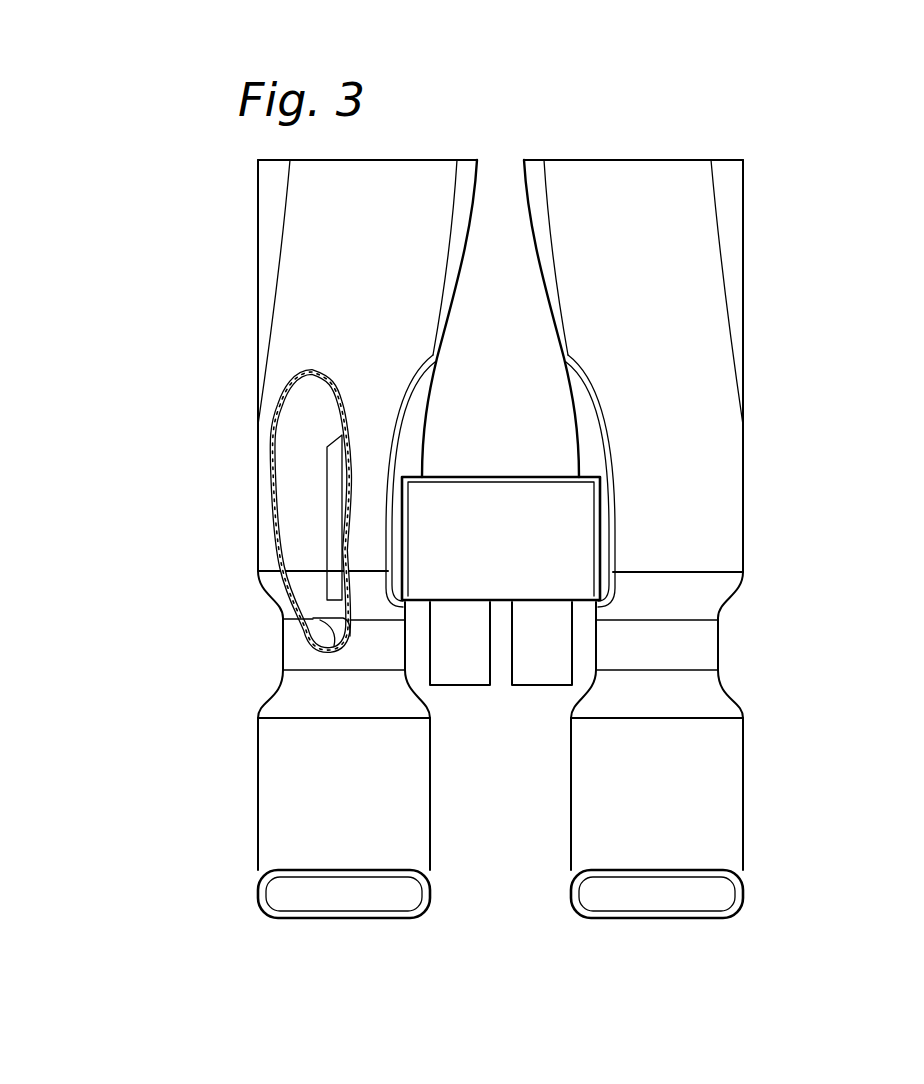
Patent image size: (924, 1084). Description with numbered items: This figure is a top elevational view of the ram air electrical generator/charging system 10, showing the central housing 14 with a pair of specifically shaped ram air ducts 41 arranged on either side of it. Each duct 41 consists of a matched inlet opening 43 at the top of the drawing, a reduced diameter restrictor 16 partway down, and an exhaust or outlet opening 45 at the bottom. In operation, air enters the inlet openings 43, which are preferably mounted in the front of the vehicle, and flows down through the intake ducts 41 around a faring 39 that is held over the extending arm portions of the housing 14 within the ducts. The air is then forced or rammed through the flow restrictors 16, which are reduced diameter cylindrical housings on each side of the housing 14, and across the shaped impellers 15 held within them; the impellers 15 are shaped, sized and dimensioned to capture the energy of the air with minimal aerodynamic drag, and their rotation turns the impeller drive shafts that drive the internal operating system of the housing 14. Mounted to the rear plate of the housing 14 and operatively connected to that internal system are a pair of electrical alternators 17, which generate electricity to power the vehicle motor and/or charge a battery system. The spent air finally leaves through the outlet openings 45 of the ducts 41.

The clip assembly 10 is at (782, 533).
The central housing 14 is at (504, 468).
The impellers 15 is at (312, 627).
The flow restrictors 16 is at (292, 657).
The electrical alternators 17 is at (546, 686).
The faring 39 is at (330, 518).
The ram air ducts 41 is at (246, 254).
The inlet openings 43 is at (592, 160).
The exhaust or outlet openings 45 is at (610, 904).